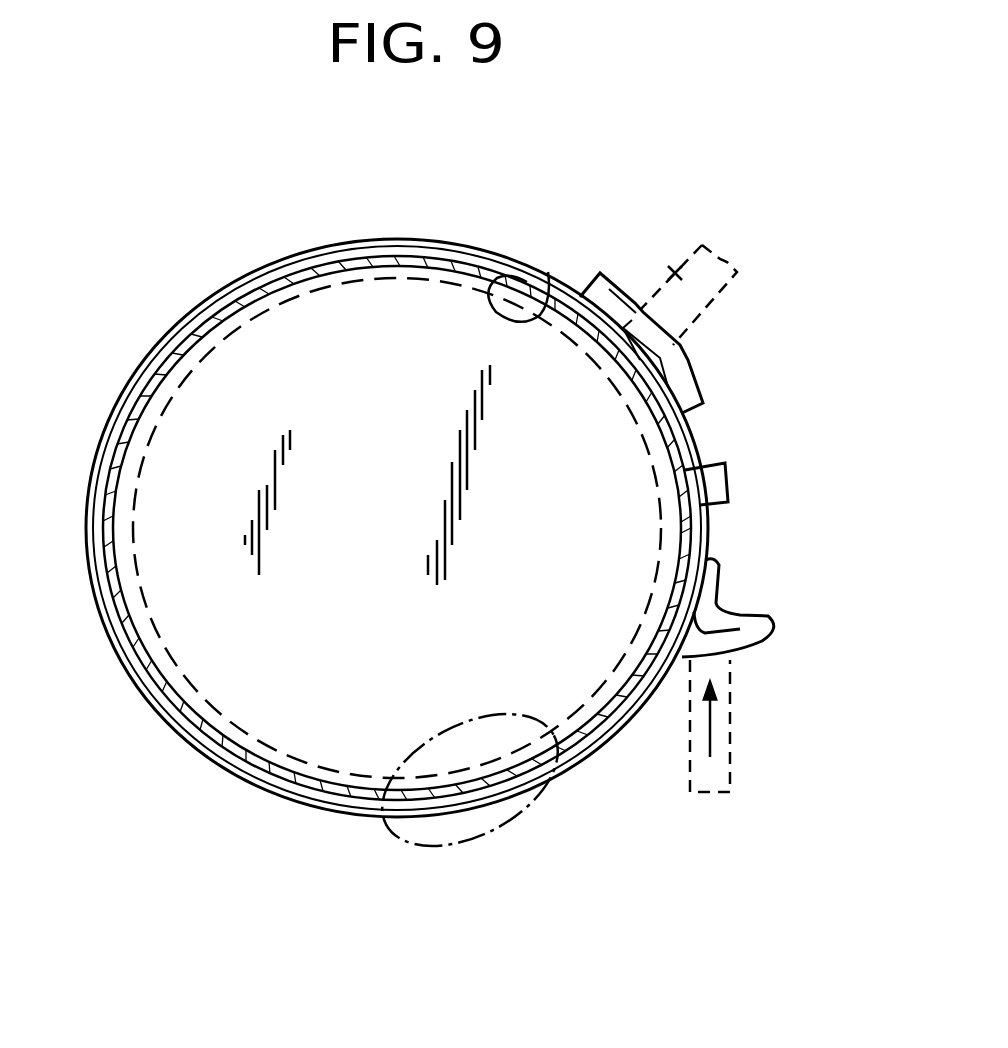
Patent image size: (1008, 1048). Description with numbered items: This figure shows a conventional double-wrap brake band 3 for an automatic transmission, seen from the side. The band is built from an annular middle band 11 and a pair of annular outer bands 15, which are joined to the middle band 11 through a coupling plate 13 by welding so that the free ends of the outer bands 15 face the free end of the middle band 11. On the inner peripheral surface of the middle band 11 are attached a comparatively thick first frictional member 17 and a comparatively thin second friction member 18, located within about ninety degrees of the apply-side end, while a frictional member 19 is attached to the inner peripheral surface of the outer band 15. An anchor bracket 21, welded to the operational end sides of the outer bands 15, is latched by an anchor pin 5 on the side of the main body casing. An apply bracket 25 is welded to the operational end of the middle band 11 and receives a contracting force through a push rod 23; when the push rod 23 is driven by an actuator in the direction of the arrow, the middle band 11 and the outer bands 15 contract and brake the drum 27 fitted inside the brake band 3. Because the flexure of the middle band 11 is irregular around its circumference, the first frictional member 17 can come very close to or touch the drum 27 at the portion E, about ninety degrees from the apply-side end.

The double-wrap brake band 3 is at (800, 349).
The anchor pin 5 is at (675, 273).
The middle band 11 is at (297, 253).
The coupling plate 13 is at (722, 486).
The outer band 15 is at (462, 250).
The first frictional member 17 is at (312, 770).
The second friction member 18 is at (463, 795).
The frictional member 19 is at (548, 272).
The anchor bracket 21 is at (682, 373).
The push rod 23 is at (730, 703).
The apply bracket 25 is at (768, 618).
The drum 27 is at (122, 405).
The portion E is at (520, 828).